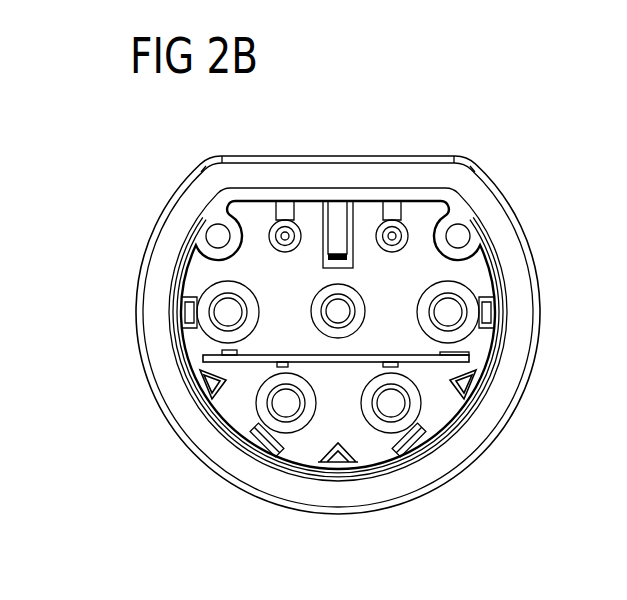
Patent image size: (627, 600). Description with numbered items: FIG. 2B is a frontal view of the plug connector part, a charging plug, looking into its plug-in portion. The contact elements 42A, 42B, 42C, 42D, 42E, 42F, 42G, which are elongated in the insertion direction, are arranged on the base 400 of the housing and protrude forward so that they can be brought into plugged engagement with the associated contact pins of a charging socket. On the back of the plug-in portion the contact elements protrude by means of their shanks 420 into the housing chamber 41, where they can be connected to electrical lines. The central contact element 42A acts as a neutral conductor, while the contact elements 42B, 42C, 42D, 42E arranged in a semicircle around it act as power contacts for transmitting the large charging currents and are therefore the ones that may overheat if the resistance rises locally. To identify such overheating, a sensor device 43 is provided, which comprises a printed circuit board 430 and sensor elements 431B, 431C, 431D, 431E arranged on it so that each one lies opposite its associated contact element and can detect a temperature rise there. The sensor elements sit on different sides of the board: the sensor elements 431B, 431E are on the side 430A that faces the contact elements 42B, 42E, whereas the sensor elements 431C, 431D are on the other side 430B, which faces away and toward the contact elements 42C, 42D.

The housing chamber 41 is at (264, 271).
The central contact element 42A is at (362, 303).
The contact element 42B is at (210, 293).
The contact element 42C is at (292, 433).
The contact element 42D is at (400, 433).
The contact element 42E is at (463, 297).
The contact element 42F is at (401, 228).
The contact element 42G is at (285, 222).
The base 400 is at (364, 213).
The shanks 420 is at (207, 313).
The sensor device 43 is at (335, 407).
The printed circuit board 430 is at (247, 363).
The side of the printed circuit board 430A is at (381, 357).
The other side of the printed circuit board 430B is at (494, 389).
The sensor element 431B is at (232, 351).
The sensor element 431C is at (287, 365).
The sensor element 431D is at (437, 440).
The sensor element 431E is at (441, 353).